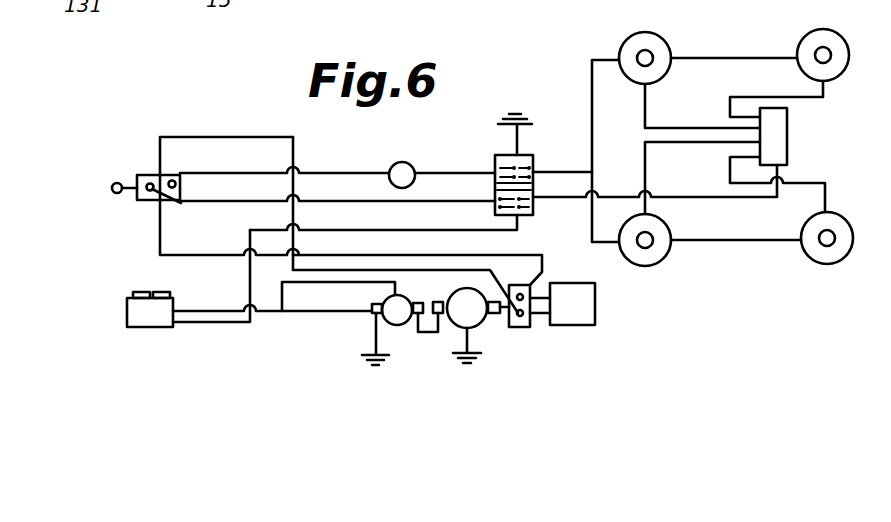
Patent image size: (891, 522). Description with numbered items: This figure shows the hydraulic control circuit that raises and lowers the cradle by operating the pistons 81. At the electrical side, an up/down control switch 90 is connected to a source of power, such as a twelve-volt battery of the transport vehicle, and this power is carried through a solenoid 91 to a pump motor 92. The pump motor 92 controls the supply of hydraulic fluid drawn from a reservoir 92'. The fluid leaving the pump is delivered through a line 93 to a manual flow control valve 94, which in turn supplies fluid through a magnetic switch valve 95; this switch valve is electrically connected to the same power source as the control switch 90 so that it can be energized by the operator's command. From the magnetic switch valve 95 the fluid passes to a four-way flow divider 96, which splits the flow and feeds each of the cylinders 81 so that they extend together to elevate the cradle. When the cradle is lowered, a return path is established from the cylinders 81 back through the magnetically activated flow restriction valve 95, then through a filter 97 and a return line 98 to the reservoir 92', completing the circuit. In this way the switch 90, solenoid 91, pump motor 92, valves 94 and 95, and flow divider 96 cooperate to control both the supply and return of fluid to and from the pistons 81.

The pistons 81 is at (648, 52).
The up/down control switch 90 is at (132, 296).
The solenoid 91 is at (398, 325).
The pump motor 92 is at (493, 331).
The reservoir 92' is at (606, 323).
The line 93 is at (530, 253).
The manual flow control valve 94 is at (140, 175).
The magnetic switch valve 95 is at (530, 155).
The four-way flow divider 96 is at (790, 140).
The filter 97 is at (440, 146).
The return line 98 is at (298, 158).